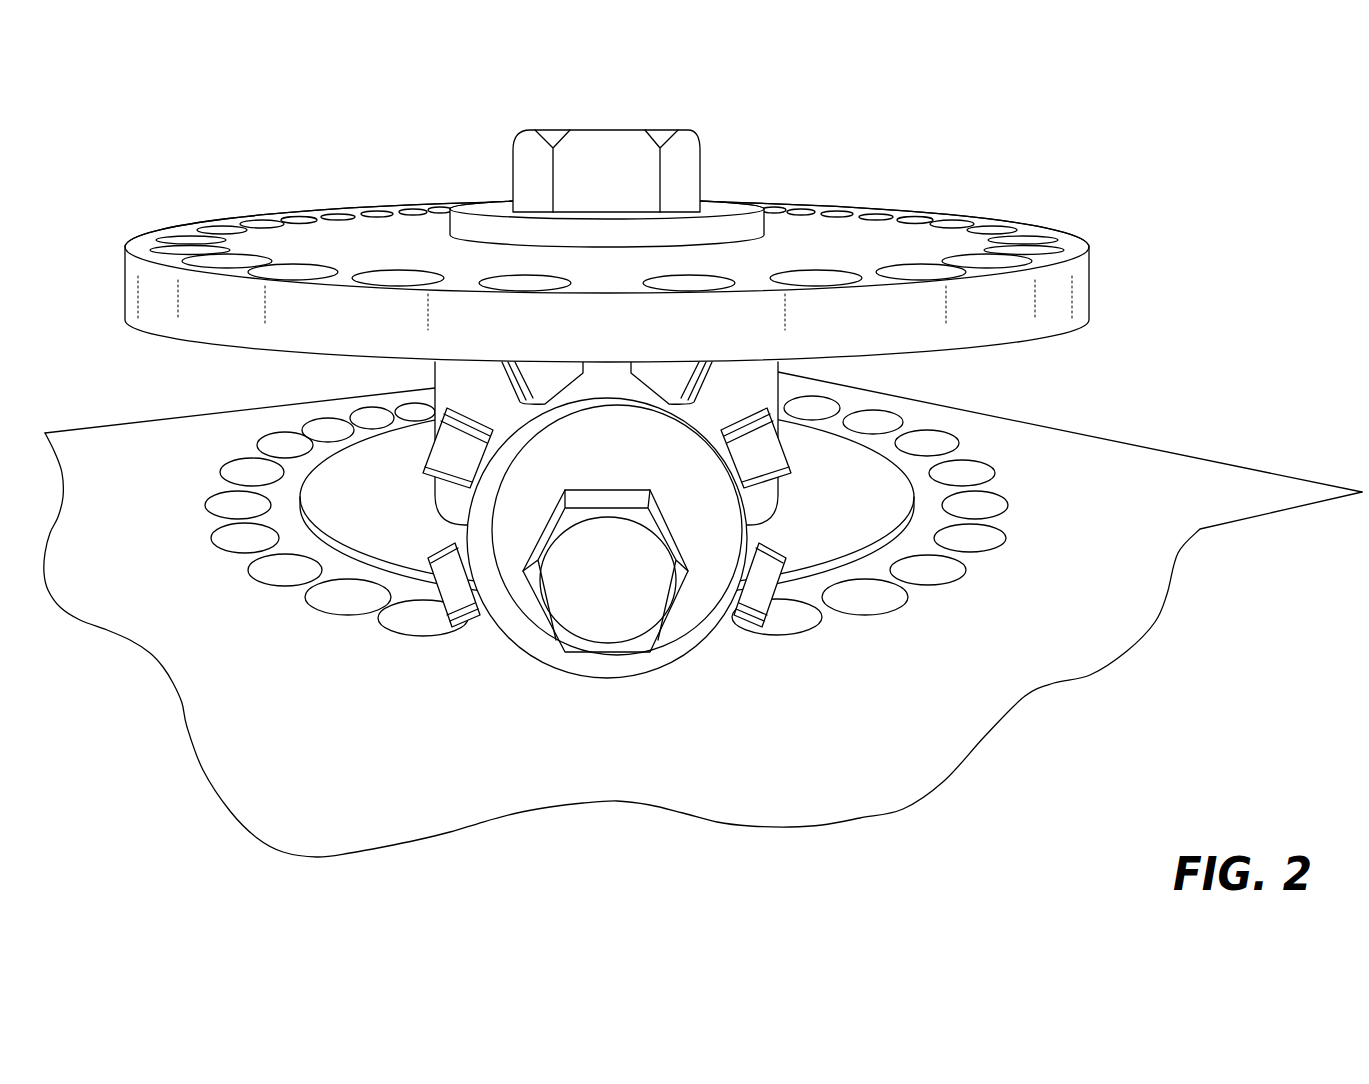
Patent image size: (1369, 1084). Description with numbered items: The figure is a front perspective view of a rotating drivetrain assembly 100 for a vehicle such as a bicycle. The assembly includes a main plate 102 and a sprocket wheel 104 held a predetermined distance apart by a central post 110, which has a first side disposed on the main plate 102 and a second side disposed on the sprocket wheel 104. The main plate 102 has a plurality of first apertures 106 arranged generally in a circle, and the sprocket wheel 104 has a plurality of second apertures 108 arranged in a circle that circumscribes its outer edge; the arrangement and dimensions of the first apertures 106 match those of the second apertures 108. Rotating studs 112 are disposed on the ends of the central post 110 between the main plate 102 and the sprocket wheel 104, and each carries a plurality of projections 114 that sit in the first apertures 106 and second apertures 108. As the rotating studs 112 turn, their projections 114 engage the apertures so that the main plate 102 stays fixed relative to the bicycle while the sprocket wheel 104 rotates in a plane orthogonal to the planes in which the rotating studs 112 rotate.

The rotating drivetrain assembly 100 is at (738, 419).
The main plate 102 is at (844, 671).
The sprocket wheel 104 is at (790, 237).
The first apertures 106 is at (228, 538).
The second apertures 108 is at (308, 264).
The central post 110 is at (751, 390).
The rotating studs 112 is at (508, 612).
The projections 114 is at (768, 463).